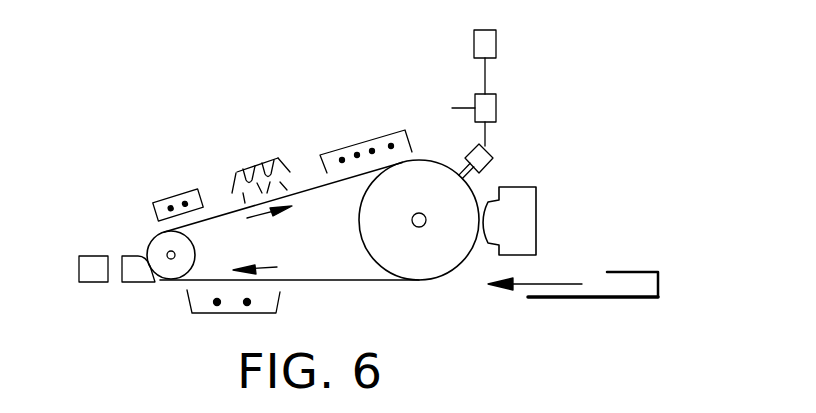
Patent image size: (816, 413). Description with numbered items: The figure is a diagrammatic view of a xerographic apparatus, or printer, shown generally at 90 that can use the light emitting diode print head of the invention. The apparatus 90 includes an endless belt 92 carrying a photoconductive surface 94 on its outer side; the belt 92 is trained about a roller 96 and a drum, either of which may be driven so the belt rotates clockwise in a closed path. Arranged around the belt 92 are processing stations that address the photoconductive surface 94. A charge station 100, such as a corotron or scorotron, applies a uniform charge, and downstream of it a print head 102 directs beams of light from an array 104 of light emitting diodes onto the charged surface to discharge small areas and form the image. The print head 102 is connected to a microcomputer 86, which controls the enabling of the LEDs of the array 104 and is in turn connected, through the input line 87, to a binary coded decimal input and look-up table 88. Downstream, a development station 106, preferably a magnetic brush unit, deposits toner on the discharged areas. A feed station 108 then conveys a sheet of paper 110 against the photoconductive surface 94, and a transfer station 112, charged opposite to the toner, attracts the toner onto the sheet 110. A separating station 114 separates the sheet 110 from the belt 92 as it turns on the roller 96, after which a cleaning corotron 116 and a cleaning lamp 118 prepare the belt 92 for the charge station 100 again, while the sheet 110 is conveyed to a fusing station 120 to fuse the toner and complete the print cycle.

The microcomputer 86 is at (497, 104).
The BDC signal line 87 is at (468, 106).
The BCD input and look-up table 88 is at (497, 47).
The xerographic apparatus 90 is at (586, 144).
The endless belt 92 is at (297, 280).
The photoconductive surface 94 is at (380, 281).
The roller 96 is at (194, 247).
The charge station 100 is at (383, 133).
The print head 102 is at (494, 154).
The array of light emitting diodes 104 is at (458, 167).
The development station 106 is at (537, 200).
The feed station 108 is at (660, 288).
The sheet of paper 110 is at (550, 280).
The transfer station 112 is at (238, 314).
The separating station 114 is at (146, 293).
The cleaning corotron 116 is at (163, 192).
The cleaning lamp 118 is at (250, 167).
The fusing station 120 is at (98, 255).